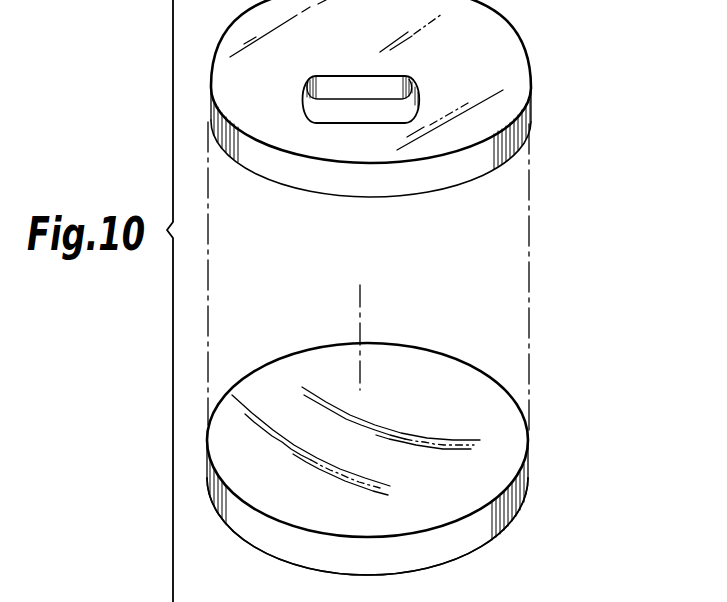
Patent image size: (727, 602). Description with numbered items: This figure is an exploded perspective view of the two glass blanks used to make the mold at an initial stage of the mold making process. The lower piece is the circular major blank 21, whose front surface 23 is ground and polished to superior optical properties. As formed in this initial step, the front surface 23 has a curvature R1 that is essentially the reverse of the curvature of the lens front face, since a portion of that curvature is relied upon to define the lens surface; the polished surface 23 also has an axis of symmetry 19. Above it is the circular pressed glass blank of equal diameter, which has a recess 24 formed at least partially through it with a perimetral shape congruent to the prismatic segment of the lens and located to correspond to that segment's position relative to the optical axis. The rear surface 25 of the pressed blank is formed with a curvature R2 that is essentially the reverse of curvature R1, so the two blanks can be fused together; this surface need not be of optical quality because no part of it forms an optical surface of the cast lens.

The recess 24 is at (372, 44).
The rear surface 25 is at (323, 195).
The curvature R2 is at (469, 184).
The axis of symmetry 19 is at (364, 293).
The major blank 21 is at (431, 347).
The front surface 23 is at (500, 402).
The curvature R1 is at (525, 456).